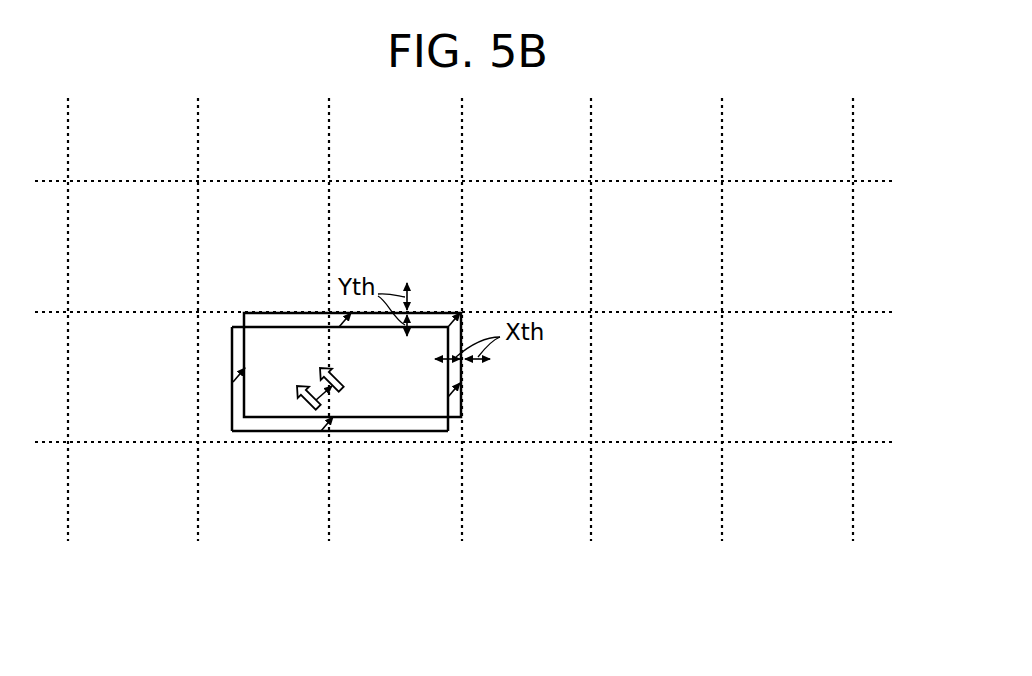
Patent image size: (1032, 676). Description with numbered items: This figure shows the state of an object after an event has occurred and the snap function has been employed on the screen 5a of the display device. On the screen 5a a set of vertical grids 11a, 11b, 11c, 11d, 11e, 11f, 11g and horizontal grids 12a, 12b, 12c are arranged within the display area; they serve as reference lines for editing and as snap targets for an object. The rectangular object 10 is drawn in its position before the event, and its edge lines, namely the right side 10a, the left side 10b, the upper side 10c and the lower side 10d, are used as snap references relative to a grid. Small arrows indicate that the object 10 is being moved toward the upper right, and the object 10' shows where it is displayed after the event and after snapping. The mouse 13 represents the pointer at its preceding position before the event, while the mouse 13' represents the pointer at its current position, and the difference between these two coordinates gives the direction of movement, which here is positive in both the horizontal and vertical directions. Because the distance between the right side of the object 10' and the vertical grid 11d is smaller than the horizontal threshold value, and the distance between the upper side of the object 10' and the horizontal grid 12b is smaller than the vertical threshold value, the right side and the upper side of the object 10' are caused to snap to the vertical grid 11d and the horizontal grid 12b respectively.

The screen 5a is at (470, 374).
The object 10 is at (312, 374).
The object after event 10' is at (352, 431).
The right side 10a is at (448, 404).
The left side 10b is at (232, 344).
The upper side 10c is at (269, 326).
The lower side 10d is at (366, 431).
The vertical grid 11a is at (68, 507).
The vertical grid 11b is at (198, 517).
The vertical grid 11c is at (329, 518).
The vertical grid 11d is at (462, 518).
The vertical grid 11e is at (591, 518).
The vertical grid 11f is at (722, 518).
The vertical grid 11g is at (853, 518).
The horizontal grid 12a is at (880, 183).
The horizontal grid 12b is at (880, 314).
The horizontal grid 12c is at (880, 444).
The mouse 13 is at (282, 445).
The mouse after event 13' is at (293, 294).